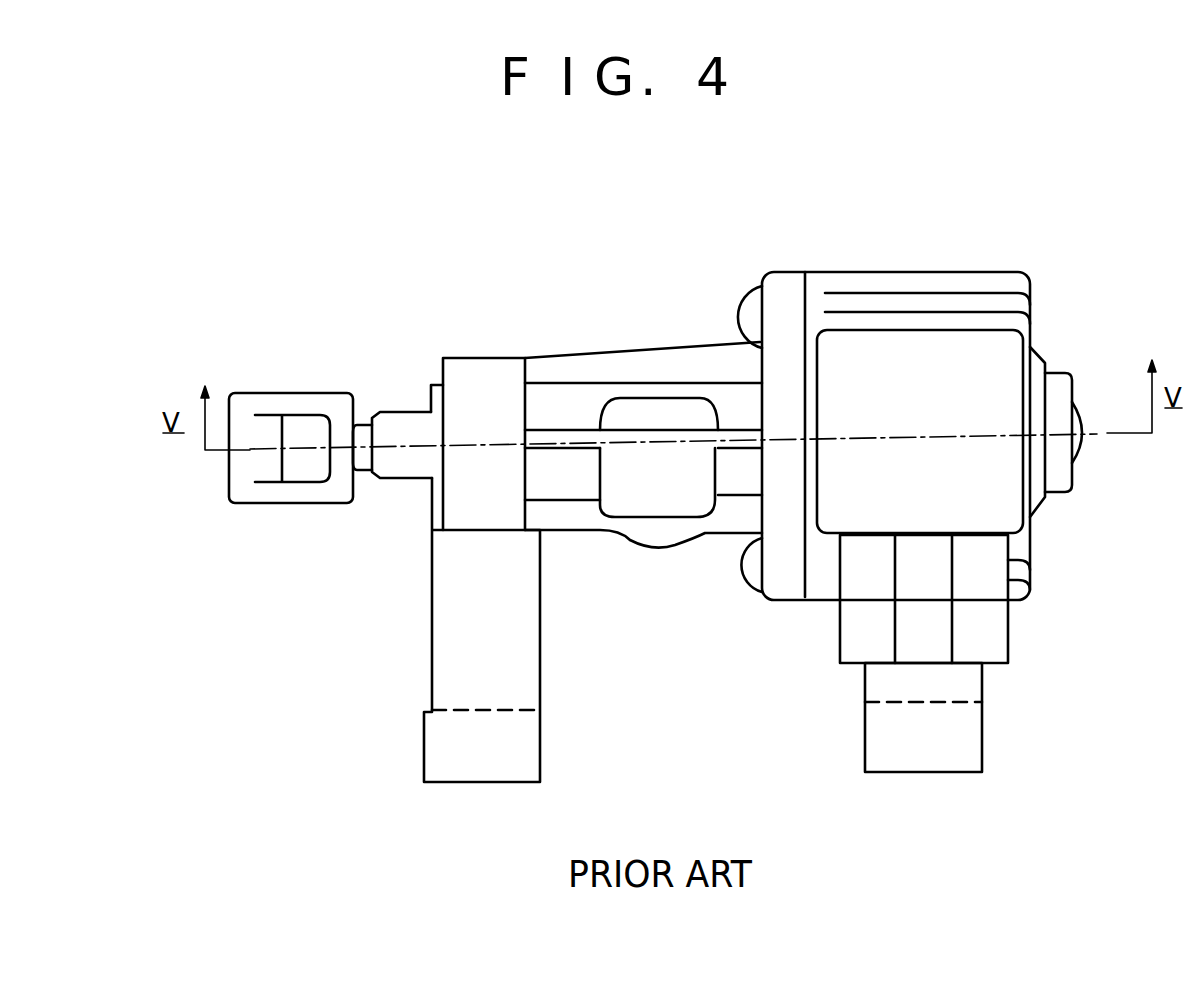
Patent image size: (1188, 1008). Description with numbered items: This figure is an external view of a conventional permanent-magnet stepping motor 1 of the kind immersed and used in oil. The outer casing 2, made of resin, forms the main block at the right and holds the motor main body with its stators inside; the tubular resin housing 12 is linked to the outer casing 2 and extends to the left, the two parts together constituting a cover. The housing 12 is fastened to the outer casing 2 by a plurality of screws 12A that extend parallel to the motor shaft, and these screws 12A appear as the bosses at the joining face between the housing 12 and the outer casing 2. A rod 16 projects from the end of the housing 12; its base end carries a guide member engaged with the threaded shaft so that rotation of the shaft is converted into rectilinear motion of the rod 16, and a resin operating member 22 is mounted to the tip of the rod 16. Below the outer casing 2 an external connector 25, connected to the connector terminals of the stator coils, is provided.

The permanent-magnet stepping motor 1 is at (968, 261).
The outer casing 2 is at (1035, 292).
The housing 12 is at (565, 357).
The screws 12A is at (740, 300).
The rod 16 is at (402, 411).
The operating member 22 is at (322, 391).
The external connector 25 is at (997, 633).